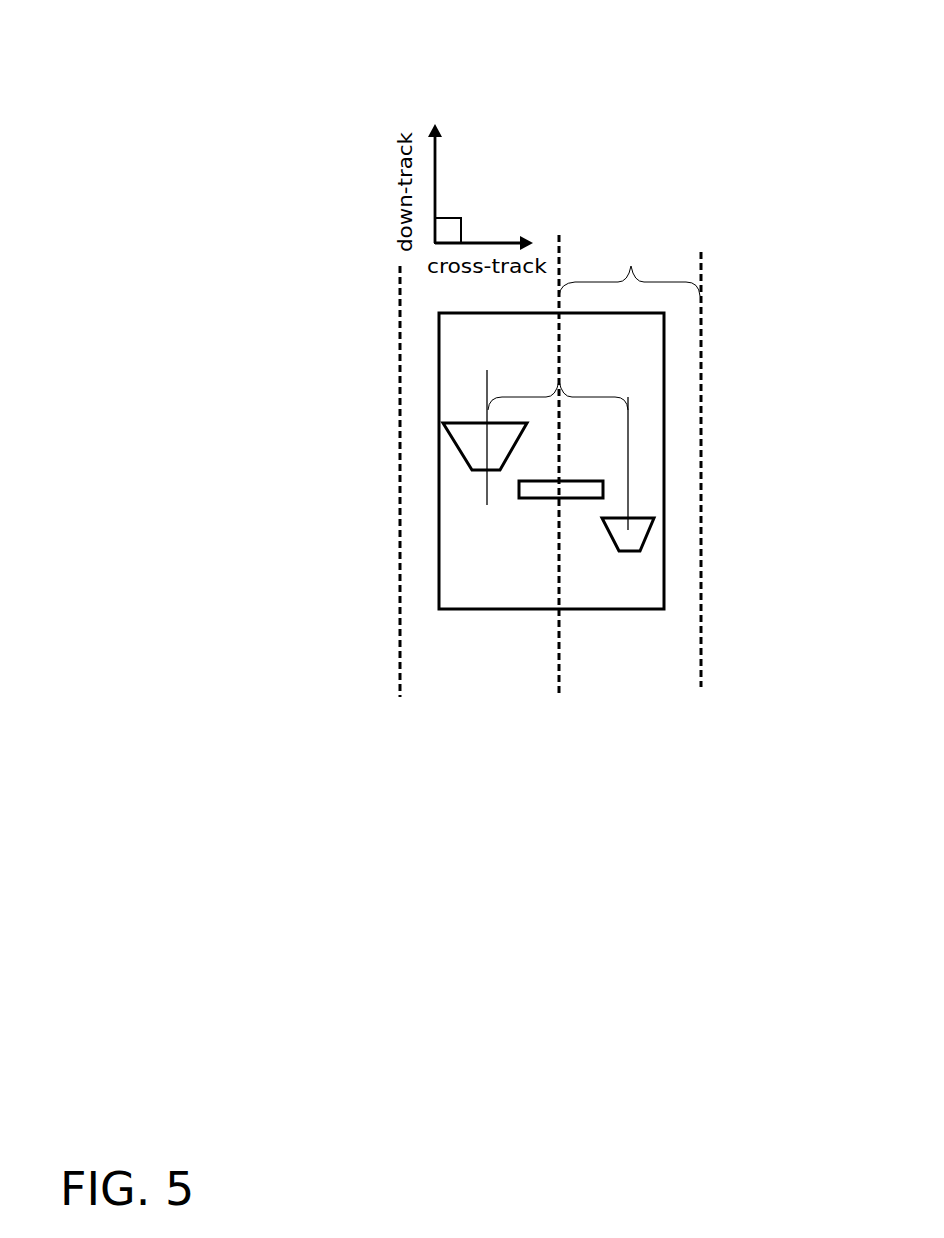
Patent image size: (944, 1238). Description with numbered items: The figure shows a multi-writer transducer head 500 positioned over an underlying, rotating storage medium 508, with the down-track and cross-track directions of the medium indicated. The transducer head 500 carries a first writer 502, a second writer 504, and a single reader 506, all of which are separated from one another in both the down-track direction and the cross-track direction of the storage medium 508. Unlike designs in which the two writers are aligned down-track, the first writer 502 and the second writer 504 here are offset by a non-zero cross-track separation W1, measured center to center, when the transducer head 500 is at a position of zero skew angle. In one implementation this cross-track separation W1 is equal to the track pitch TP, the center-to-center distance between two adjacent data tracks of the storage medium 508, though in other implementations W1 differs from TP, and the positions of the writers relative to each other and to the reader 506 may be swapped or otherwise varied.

The transducer head 500 is at (488, 348).
The first writer 502 is at (650, 543).
The second writer 504 is at (445, 435).
The reader 506 is at (603, 491).
The storage medium 508 is at (660, 662).
The track pitch TP is at (632, 258).
The cross-track separation W1 is at (560, 379).